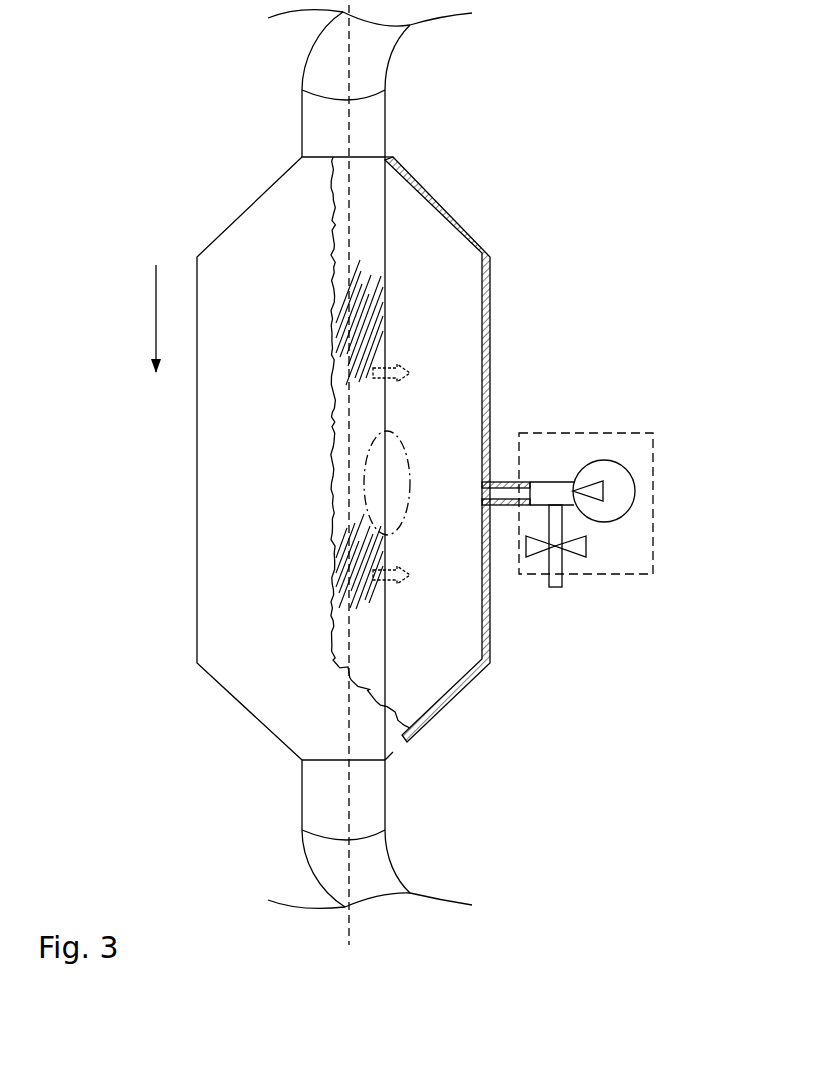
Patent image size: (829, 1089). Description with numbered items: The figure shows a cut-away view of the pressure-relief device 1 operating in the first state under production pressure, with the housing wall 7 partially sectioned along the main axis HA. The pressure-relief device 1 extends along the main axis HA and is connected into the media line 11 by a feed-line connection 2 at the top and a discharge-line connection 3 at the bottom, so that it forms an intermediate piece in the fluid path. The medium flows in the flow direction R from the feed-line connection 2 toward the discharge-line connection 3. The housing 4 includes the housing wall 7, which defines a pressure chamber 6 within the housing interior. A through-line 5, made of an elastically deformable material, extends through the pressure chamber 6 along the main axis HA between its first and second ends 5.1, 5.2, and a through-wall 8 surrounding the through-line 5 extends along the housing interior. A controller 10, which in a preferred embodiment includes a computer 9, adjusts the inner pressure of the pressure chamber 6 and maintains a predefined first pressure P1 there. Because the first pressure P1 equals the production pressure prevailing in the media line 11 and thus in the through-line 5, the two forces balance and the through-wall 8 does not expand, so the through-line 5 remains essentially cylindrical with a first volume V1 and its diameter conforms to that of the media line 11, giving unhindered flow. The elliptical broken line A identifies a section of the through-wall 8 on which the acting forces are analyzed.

The pressure-relief device 1 is at (547, 161).
The feed-line connection 2 is at (300, 124).
The discharge-line connection 3 is at (300, 787).
The housing 4 is at (197, 400).
The through-line 5 is at (376, 340).
The first end of through-line 5.1 is at (366, 155).
The second end of through-line 5.2 is at (389, 763).
The pressure chamber 6 is at (406, 582).
The housing wall 7 is at (488, 428).
The through-wall 8 is at (388, 402).
The computer 9 is at (607, 505).
The controller 10 is at (616, 487).
The media line 11 is at (375, 69).
The first volume V1 is at (374, 224).
The first pressure P1 is at (435, 679).
The elliptical broken line A is at (392, 483).
The flow direction R is at (146, 318).
The main axis HA is at (372, 477).